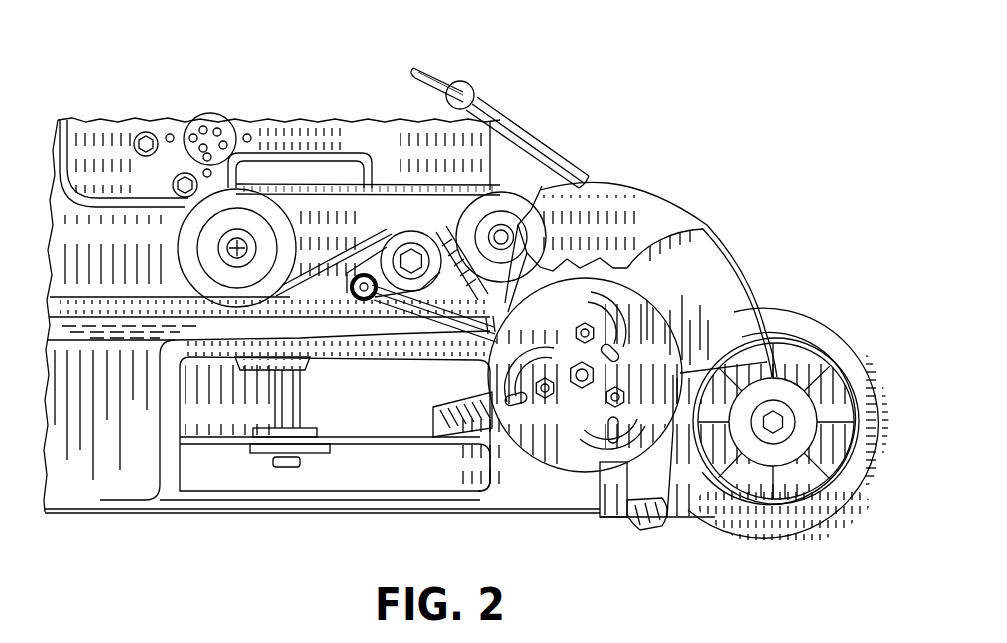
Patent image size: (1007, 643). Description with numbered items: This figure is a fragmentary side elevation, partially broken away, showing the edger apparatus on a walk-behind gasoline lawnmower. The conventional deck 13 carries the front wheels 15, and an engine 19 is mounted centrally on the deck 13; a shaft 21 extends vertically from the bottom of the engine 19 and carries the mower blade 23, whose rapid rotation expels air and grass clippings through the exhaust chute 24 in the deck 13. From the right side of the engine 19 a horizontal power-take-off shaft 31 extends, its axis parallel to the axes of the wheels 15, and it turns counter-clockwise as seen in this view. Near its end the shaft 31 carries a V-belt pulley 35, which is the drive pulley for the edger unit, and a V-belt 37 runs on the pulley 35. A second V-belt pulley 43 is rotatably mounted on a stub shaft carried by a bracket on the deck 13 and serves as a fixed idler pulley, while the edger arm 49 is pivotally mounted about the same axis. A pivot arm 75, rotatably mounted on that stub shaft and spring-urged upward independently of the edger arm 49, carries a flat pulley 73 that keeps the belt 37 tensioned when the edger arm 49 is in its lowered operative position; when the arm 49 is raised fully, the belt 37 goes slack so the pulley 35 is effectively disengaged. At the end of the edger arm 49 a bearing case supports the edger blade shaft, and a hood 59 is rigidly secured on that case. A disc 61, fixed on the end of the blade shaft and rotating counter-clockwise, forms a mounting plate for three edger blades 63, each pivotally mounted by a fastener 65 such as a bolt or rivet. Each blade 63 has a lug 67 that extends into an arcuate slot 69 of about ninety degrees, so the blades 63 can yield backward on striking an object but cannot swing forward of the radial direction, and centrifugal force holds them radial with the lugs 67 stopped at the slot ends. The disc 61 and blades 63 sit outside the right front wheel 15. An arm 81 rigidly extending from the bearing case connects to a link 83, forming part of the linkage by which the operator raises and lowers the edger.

The deck 13 is at (131, 482).
The front wheels 15 is at (777, 304).
The engine 19 is at (84, 128).
The shaft 21 is at (300, 411).
The mower blade 23 is at (370, 444).
The exhaust chute 24 is at (445, 512).
The power-take-off shaft 31 is at (228, 246).
The V-belt pulley 35 is at (186, 231).
The V-belt 37 is at (333, 184).
The V-belt pulley 43 is at (498, 192).
The edger arm 49 is at (457, 363).
The hood 59 is at (652, 197).
The disc 61 is at (580, 468).
The edger blades 63 is at (437, 397).
The fastener 65 is at (558, 400).
The lug 67 is at (556, 410).
The arcuate slot 69 is at (556, 345).
The flat pulley 73 is at (408, 240).
The pivot arm 75 is at (354, 257).
The arm 81 is at (490, 100).
The link 83 is at (433, 69).